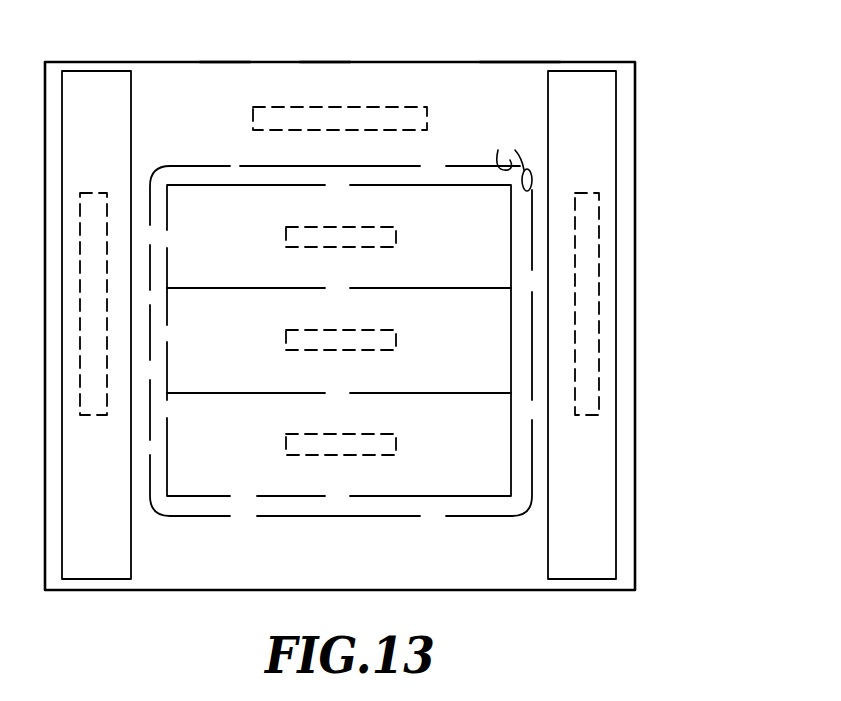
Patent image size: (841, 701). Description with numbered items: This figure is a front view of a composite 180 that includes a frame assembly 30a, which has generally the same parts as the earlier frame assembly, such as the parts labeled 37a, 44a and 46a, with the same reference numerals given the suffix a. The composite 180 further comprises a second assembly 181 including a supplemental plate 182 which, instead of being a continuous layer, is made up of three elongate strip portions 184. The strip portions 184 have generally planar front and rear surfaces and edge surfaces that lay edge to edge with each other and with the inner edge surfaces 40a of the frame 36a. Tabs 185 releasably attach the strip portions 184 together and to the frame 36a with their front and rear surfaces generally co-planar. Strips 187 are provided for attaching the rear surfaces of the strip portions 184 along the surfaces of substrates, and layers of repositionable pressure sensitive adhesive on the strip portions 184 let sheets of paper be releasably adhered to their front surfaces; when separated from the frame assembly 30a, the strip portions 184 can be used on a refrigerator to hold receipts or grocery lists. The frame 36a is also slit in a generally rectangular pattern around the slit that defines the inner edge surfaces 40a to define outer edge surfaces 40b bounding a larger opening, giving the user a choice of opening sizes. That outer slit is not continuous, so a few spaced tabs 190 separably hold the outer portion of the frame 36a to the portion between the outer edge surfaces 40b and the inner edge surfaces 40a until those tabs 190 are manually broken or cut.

The composite 180 is at (650, 82).
The frame assembly 30a is at (537, 38).
The frame 36a is at (322, 60).
The front wall 37a is at (221, 78).
The fastener tab 44a is at (397, 107).
The side flange 46a is at (93, 565).
The supplemental plate 182 is at (197, 192).
The outer edge surfaces 40b is at (505, 151).
The strip portions 184 is at (250, 272).
The strips 187 is at (397, 229).
The tabs 185 is at (172, 236).
The tabs 190 is at (440, 172).
The inner edge surfaces 40a is at (176, 481).
The second assembly 181 is at (466, 496).